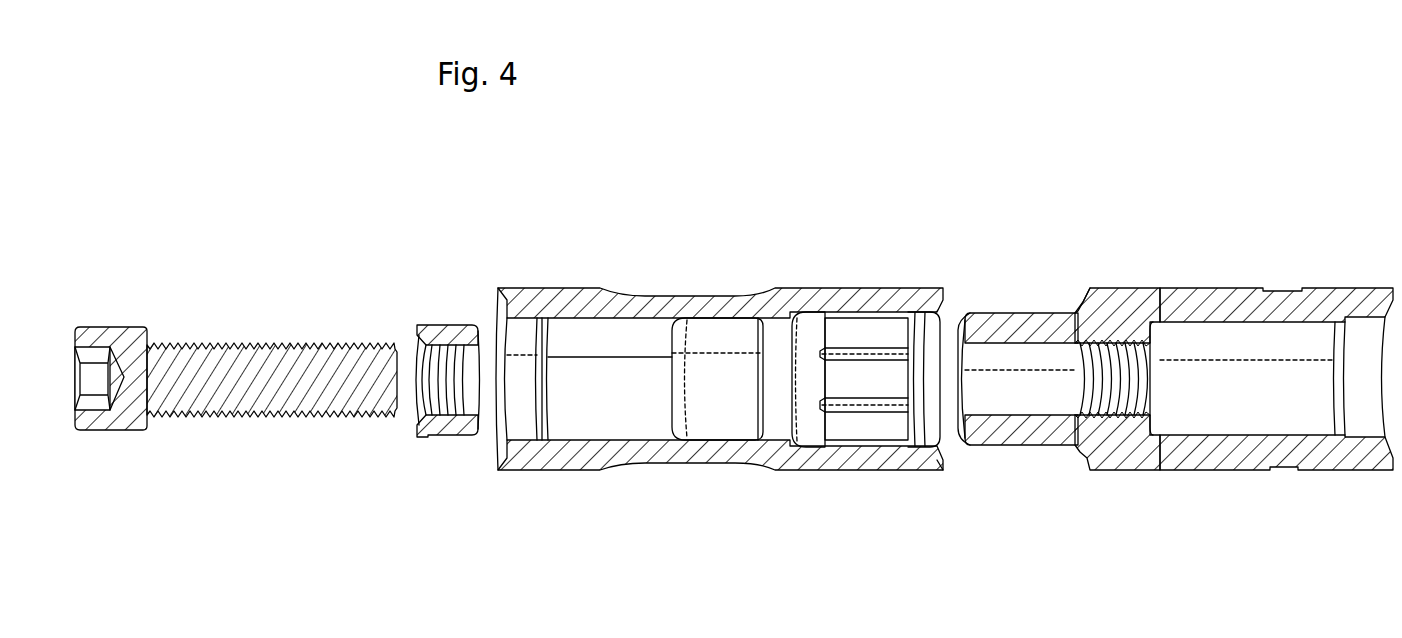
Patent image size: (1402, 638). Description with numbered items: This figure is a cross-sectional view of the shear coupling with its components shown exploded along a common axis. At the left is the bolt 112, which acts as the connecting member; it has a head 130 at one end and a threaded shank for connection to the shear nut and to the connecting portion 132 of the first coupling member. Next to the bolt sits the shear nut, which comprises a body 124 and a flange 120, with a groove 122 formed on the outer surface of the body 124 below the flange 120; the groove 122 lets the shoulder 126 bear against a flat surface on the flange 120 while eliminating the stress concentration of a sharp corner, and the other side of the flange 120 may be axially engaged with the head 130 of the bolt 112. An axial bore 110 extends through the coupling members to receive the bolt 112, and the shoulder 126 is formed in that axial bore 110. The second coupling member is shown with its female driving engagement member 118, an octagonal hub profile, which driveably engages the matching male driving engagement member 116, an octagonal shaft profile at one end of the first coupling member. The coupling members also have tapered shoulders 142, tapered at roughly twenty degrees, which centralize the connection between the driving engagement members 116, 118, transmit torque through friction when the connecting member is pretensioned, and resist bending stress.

The axial bore 110 is at (635, 368).
The bolt 112 is at (255, 345).
The male driving engagement member 116 is at (1175, 339).
The female driving engagement member 118 is at (888, 332).
The flange 120 is at (410, 386).
The groove 122 is at (428, 328).
The body 124 is at (450, 432).
The shoulder 126 is at (735, 323).
The head 130 is at (122, 327).
The connecting portion 132 is at (1125, 342).
The tapered shoulders 142 is at (1097, 300).